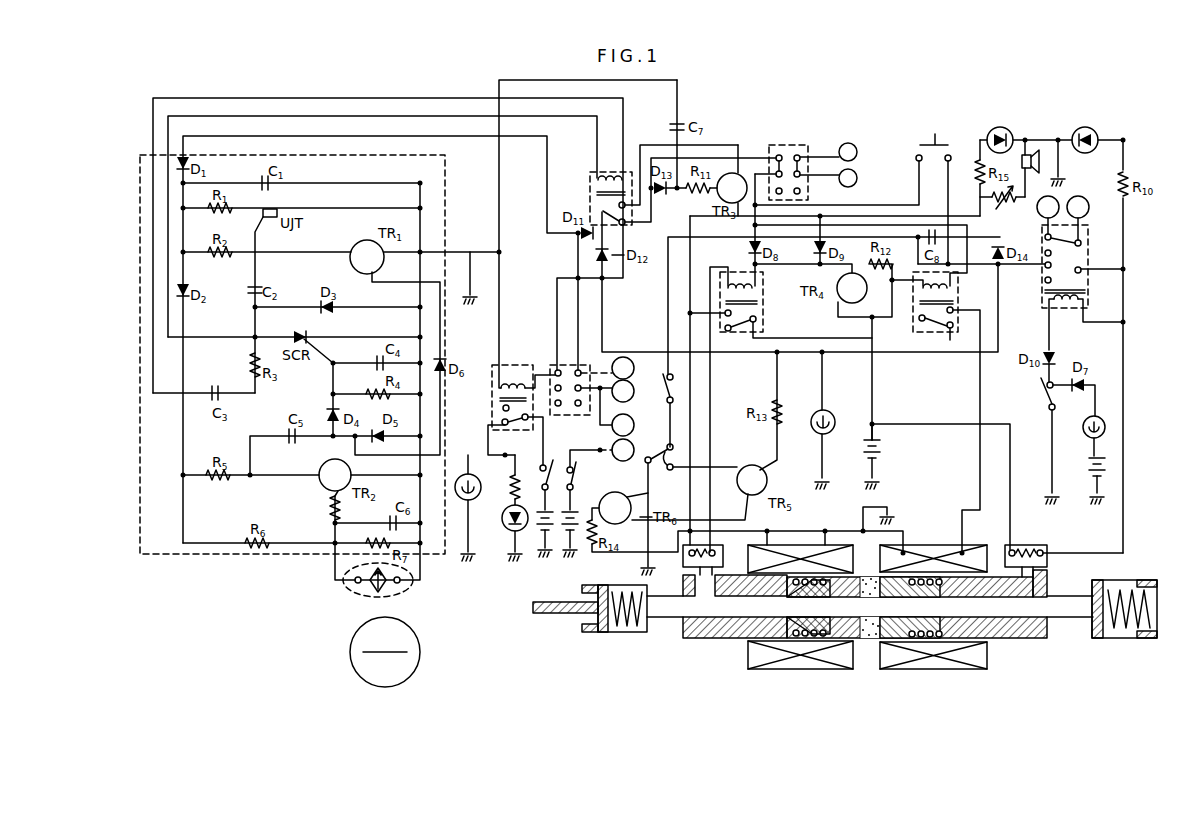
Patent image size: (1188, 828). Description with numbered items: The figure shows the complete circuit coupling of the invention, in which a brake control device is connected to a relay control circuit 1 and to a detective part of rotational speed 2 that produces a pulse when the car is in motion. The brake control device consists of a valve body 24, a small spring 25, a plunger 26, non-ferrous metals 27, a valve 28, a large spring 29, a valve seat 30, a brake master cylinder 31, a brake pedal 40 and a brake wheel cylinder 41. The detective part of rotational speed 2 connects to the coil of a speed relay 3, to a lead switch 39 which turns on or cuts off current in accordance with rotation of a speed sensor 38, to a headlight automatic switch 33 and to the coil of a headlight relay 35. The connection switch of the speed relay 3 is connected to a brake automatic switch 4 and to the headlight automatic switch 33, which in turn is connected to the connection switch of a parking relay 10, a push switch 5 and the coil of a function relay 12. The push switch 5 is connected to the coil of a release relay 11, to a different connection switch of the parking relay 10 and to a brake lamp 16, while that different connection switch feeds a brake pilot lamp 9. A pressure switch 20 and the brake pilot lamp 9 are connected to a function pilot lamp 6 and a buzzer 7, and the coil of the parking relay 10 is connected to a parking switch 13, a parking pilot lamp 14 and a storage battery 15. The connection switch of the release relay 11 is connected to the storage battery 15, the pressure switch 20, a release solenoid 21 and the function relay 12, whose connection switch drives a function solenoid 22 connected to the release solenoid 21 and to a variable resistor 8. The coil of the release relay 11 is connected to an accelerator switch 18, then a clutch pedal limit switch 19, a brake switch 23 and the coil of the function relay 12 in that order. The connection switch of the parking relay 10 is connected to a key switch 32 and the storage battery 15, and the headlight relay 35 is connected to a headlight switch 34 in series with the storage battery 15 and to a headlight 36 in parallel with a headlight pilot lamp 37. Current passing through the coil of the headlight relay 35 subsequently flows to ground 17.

The relay control circuit 1 is at (716, 107).
The detective part of rotational speed 2 is at (140, 554).
The speed relay 3 is at (592, 176).
The brake automatic switch 4 is at (800, 145).
The push switch 5 is at (938, 145).
The function pilot lamp 6 is at (1010, 130).
The buzzer 7 is at (1040, 150).
The variable resistor 8 is at (1015, 210).
The brake pilot lamp 9 is at (1097, 130).
The parking relay 10 is at (1088, 306).
The release relay 11 is at (928, 332).
The function relay 12 is at (760, 300).
The parking switch 13 is at (1040, 400).
The parking pilot lamp 14 is at (1106, 431).
The storage battery 15 is at (553, 540).
The brake lamp 16 is at (832, 414).
The ground 17 is at (912, 500).
The accelerator switch 18 is at (665, 385).
The clutch pedal limit switch 19 is at (697, 474).
The pressure switch 20 is at (1045, 548).
The release solenoid 21 is at (965, 545).
The function solenoid 22 is at (805, 545).
The brake switch 23 is at (684, 566).
The valve body 24 is at (1032, 640).
The small spring 25 is at (935, 640).
The plunger 26 is at (898, 640).
The non-ferrous metals 27 is at (870, 640).
The valve 28 is at (830, 640).
The large spring 29 is at (808, 640).
The valve seat 30 is at (706, 640).
The brake master cylinder 31 is at (622, 633).
The key switch 32 is at (576, 474).
The headlight automatic switch 33 is at (556, 367).
The headlight switch 34 is at (549, 462).
The headlight relay 35 is at (514, 364).
The headlight 36 is at (460, 497).
The headlight pilot lamp 37 is at (510, 532).
The speed sensor 38 is at (421, 662).
The lead switch 39 is at (362, 598).
The brake pedal 40 is at (555, 615).
The brake wheel cylinder 41 is at (1108, 640).